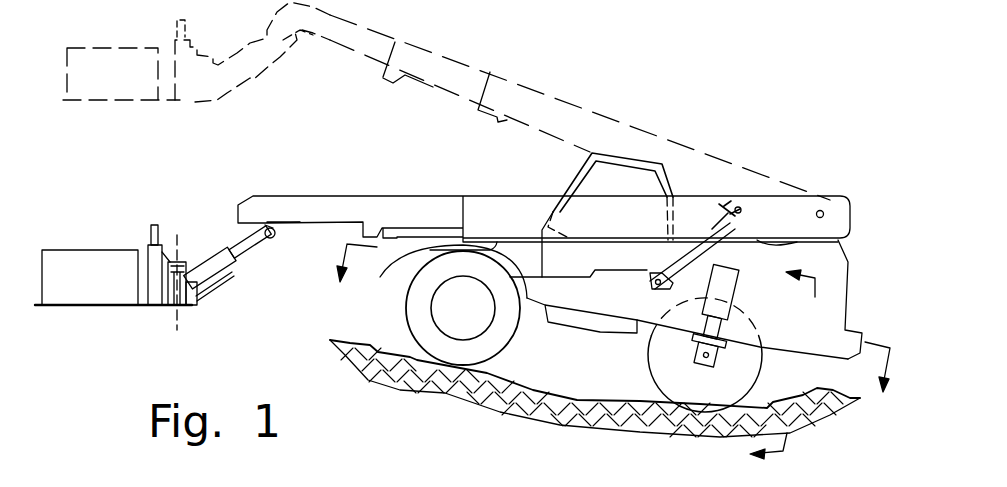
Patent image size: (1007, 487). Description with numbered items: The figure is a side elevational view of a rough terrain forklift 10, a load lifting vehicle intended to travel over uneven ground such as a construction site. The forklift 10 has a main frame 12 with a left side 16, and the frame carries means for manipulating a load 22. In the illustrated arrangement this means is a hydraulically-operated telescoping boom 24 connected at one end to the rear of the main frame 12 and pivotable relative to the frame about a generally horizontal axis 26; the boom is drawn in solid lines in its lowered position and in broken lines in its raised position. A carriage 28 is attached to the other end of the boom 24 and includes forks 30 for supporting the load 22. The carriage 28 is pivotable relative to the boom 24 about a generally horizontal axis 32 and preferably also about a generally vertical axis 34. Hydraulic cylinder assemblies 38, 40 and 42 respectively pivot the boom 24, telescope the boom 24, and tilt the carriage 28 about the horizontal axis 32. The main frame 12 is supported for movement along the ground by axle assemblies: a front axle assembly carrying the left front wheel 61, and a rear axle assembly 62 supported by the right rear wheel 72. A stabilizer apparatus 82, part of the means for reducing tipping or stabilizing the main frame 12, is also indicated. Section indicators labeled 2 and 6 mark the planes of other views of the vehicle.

The forklift 10 is at (692, 130).
The main frame 12 is at (818, 358).
The left side 16 is at (846, 259).
The load 22 is at (72, 288).
The telescoping boom 24 is at (497, 125).
The horizontal axis 26 is at (827, 211).
The carriage 28 is at (153, 226).
The forks 30 is at (90, 307).
The horizontal axis 32 is at (199, 281).
The vertical axis 34 is at (174, 314).
The hydraulic cylinder assembly 38 is at (692, 246).
The hydraulic cylinder assembly 40 is at (433, 248).
The hydraulic cylinder assembly 42 is at (232, 241).
The left front wheel 61 is at (403, 300).
The rear axle assembly 62 is at (691, 371).
The right rear wheel 72 is at (648, 360).
The stabilizer apparatus 82 is at (736, 289).
The section line 2- 2 is at (773, 357).
The section line 6- 6 is at (604, 322).